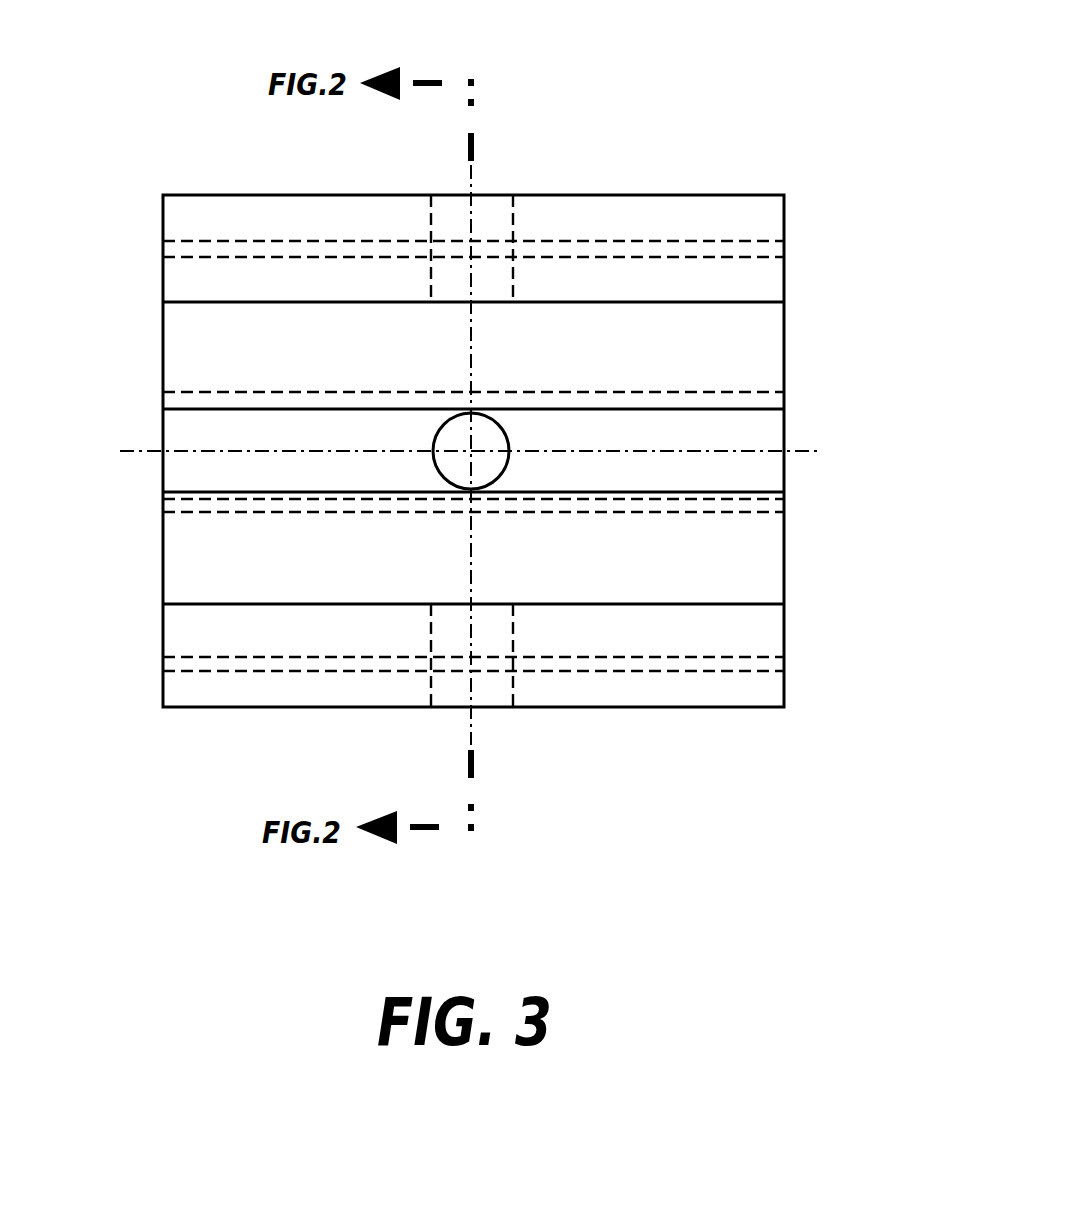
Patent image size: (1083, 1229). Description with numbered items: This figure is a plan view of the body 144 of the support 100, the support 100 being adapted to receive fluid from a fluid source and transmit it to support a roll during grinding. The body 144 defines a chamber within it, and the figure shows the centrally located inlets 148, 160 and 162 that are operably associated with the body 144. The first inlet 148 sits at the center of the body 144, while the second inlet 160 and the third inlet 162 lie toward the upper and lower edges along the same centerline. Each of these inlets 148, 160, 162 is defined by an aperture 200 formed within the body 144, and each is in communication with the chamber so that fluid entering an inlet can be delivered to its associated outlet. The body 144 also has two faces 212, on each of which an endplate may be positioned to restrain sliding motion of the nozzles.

The support 100 is at (897, 50).
The body 144 is at (816, 274).
The inlet 148 is at (507, 435).
The second inlet 160 is at (513, 195).
The third inlet 162 is at (513, 707).
The apertures 200 is at (430, 282).
The faces 212 is at (163, 583).